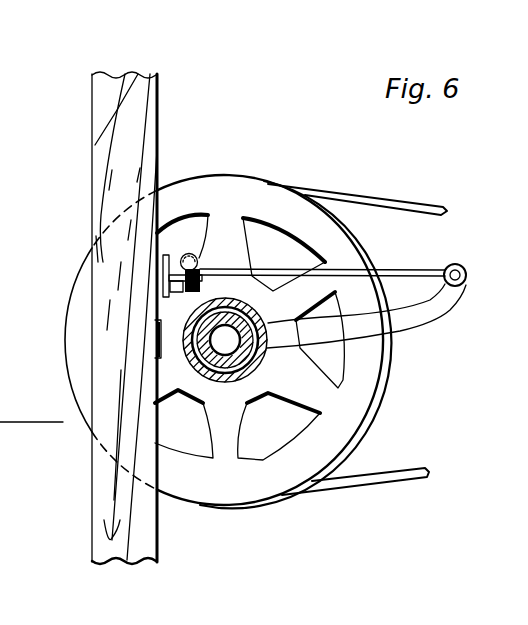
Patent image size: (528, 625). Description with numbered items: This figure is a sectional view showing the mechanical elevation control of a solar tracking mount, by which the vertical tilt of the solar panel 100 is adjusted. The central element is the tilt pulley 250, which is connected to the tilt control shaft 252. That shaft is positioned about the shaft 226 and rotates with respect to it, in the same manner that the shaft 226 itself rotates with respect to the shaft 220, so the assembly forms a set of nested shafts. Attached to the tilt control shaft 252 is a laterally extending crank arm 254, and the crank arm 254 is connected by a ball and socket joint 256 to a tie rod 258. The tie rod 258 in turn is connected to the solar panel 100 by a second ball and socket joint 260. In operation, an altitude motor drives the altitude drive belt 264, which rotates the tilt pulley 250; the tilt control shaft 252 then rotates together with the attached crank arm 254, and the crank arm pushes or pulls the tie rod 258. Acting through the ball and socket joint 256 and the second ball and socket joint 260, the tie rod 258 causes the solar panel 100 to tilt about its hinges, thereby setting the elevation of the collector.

The solar panel 100 is at (160, 112).
The shaft 220 is at (237, 395).
The shaft 226 is at (233, 378).
The tilt pulley 250 is at (251, 193).
The tilt control shaft 252 is at (267, 381).
The crank arm 254 is at (432, 308).
The ball and socket joint 256 is at (472, 274).
The tie rod 258 is at (419, 253).
The second ball and socket joint 260 is at (191, 253).
The altitude drive belt 264 is at (403, 205).